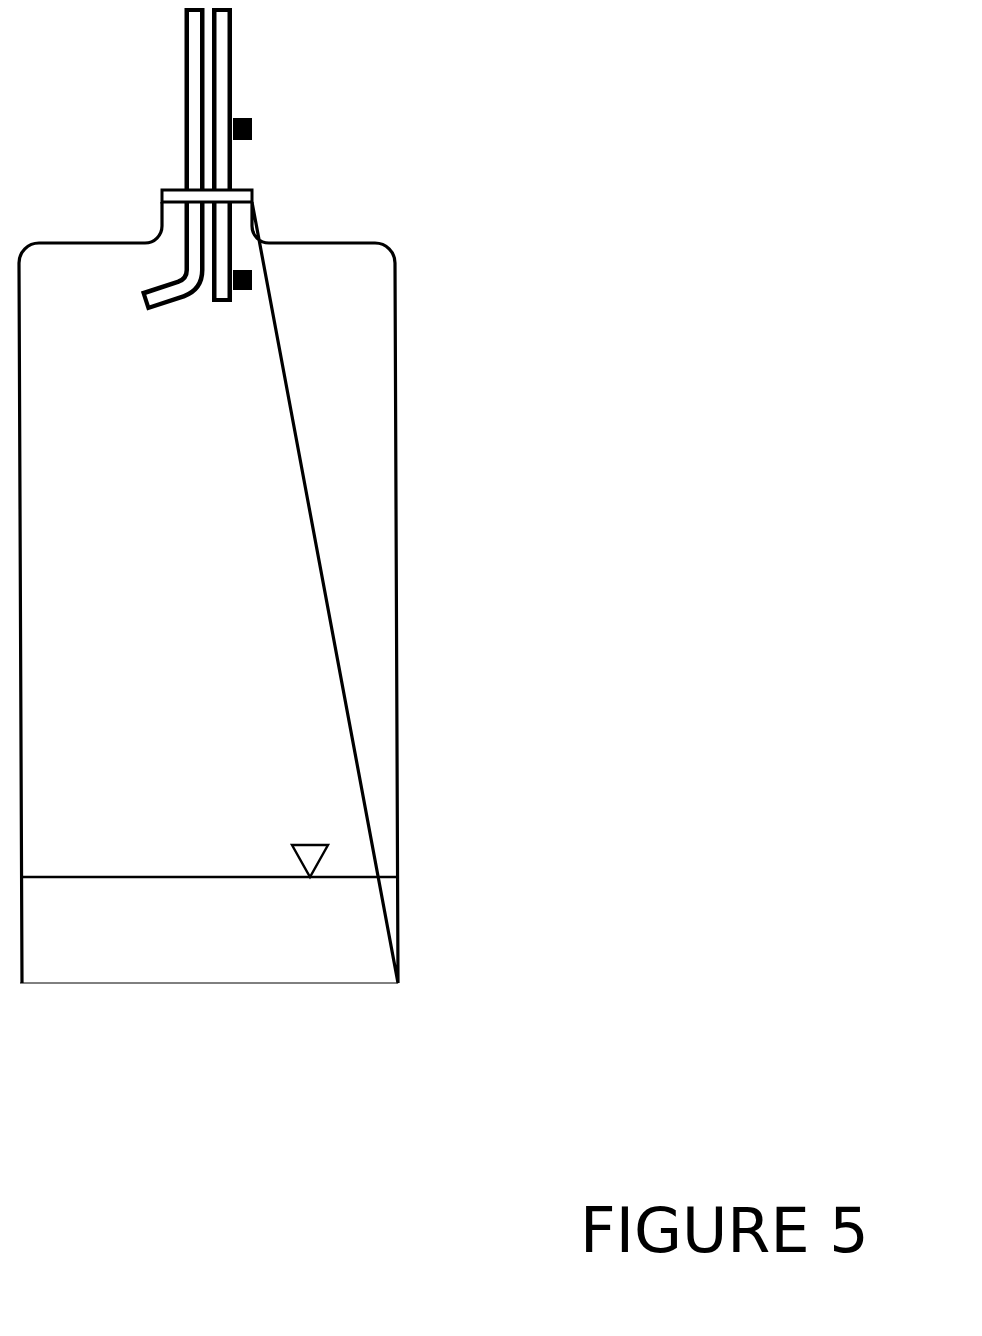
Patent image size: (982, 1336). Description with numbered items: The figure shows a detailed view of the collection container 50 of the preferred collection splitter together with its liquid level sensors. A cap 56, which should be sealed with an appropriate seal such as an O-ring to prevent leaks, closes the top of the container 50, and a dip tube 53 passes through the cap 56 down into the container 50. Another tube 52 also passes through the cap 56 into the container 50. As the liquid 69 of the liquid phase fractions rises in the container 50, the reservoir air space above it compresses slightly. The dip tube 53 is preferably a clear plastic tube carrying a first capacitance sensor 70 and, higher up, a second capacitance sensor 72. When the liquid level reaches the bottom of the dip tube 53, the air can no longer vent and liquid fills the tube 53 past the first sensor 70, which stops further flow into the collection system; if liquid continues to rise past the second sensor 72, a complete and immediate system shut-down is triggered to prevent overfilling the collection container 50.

The collection container 50 is at (396, 521).
The first tube 52 is at (183, 60).
The dip tube 53 is at (233, 68).
The cap 56 is at (254, 192).
The liquid 69 is at (227, 945).
The first capacitance sensor 70 is at (254, 278).
The second capacitance sensor 72 is at (254, 124).